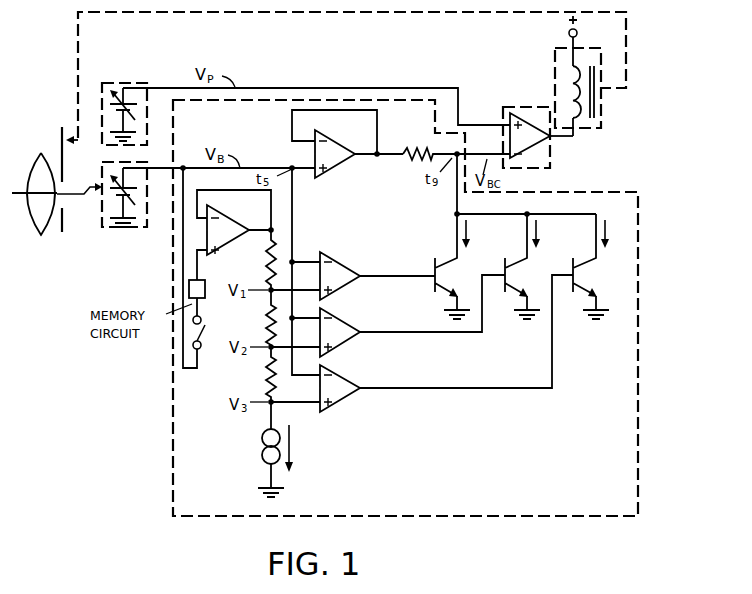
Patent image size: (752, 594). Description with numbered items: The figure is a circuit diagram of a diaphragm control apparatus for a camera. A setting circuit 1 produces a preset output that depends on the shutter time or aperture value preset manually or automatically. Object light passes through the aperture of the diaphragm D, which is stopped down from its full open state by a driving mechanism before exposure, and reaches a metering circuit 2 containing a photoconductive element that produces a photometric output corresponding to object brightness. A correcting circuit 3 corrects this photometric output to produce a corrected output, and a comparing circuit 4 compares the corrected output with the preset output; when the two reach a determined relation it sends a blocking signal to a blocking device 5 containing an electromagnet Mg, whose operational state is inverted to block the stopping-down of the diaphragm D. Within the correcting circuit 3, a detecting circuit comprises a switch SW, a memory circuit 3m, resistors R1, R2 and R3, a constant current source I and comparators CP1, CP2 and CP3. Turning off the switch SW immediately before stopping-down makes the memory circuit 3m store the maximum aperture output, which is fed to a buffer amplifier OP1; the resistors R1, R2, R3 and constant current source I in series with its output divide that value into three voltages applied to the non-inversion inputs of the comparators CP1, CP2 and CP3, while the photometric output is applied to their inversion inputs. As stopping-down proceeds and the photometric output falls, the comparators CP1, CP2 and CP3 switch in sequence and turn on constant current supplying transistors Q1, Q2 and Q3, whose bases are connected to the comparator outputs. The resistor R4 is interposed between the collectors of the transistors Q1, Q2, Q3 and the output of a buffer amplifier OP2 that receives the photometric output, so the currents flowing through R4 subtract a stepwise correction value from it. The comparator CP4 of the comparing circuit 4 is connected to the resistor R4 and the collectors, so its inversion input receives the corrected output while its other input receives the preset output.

The setting circuit 1 is at (117, 83).
The metering circuit 2 is at (113, 230).
The correcting circuit 3 is at (173, 425).
The memory circuit 3m is at (188, 286).
The comparing circuit 4 is at (541, 125).
The blocking device 5 is at (603, 116).
The electromagnet Mg is at (560, 63).
The diaphragm D is at (62, 131).
The switch SW is at (190, 342).
The buffer amplifier OP1 is at (247, 217).
The buffer amplifier OP2 is at (333, 166).
The comparator CP1 is at (340, 284).
The comparator CP2 is at (345, 341).
The comparator CP3 is at (342, 397).
The comparator CP4 is at (548, 150).
The constant current supplying transistor Q1 is at (441, 263).
The constant current supplying transistor Q2 is at (511, 263).
The constant current supplying transistor Q3 is at (580, 263).
The resistor R1 is at (263, 258).
The resistor R2 is at (263, 318).
The resistor R3 is at (263, 375).
The resistor R4 is at (411, 148).
The constant current source I is at (262, 454).